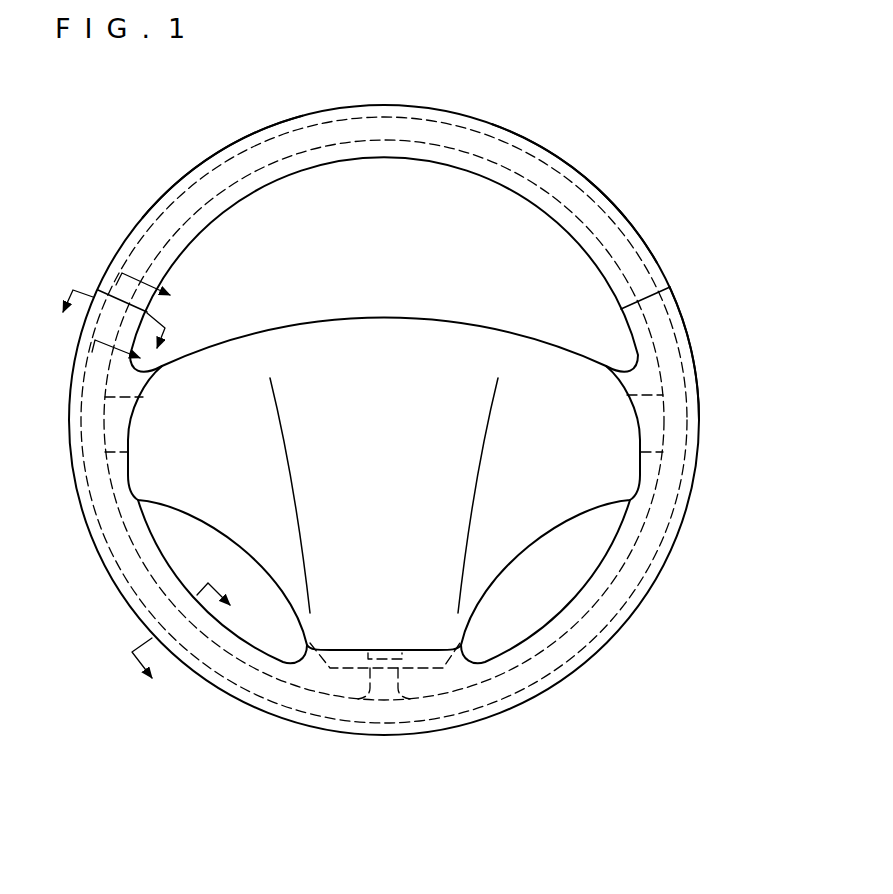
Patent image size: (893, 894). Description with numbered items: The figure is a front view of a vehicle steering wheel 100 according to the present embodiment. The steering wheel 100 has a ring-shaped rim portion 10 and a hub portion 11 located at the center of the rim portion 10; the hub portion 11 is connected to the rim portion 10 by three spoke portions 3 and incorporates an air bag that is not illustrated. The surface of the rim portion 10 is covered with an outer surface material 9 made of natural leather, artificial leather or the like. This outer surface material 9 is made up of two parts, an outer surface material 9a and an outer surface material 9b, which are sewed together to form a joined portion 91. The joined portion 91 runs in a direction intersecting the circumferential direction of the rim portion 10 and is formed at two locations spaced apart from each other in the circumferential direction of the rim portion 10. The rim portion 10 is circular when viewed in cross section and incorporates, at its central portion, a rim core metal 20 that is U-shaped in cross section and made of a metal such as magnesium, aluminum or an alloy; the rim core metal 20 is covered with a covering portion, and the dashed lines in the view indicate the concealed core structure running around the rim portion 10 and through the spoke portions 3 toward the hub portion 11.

The steering wheel 100 is at (547, 76).
The outer surface material 9 is at (433, 108).
The outer surface material 9a is at (613, 203).
The outer surface material 9b is at (688, 330).
The joined portion 91 is at (114, 294).
The rim portion 10 is at (562, 160).
The rim core metal 20 is at (223, 170).
The hub portion 11 is at (381, 333).
The spoke portion 3 is at (117, 418).